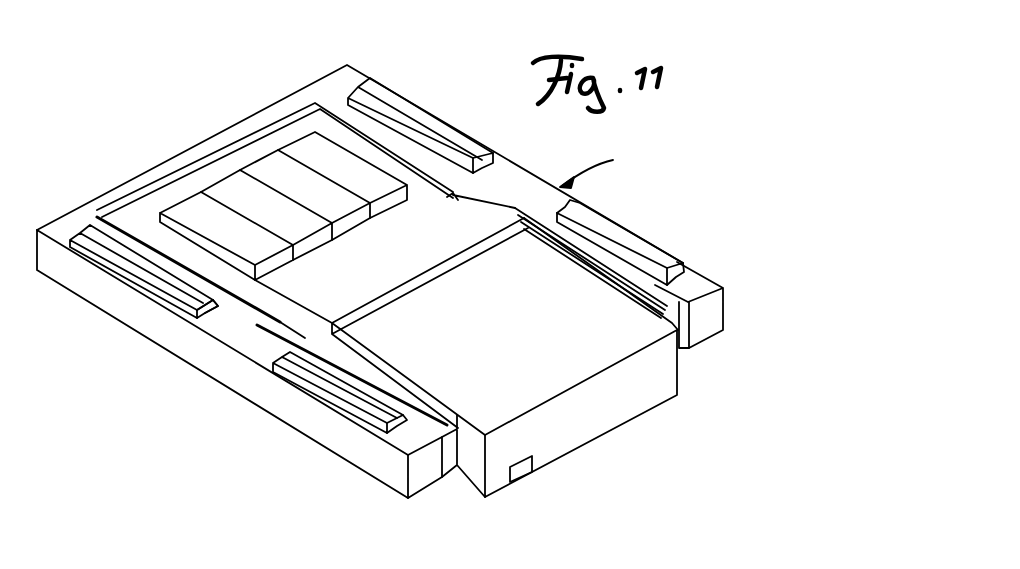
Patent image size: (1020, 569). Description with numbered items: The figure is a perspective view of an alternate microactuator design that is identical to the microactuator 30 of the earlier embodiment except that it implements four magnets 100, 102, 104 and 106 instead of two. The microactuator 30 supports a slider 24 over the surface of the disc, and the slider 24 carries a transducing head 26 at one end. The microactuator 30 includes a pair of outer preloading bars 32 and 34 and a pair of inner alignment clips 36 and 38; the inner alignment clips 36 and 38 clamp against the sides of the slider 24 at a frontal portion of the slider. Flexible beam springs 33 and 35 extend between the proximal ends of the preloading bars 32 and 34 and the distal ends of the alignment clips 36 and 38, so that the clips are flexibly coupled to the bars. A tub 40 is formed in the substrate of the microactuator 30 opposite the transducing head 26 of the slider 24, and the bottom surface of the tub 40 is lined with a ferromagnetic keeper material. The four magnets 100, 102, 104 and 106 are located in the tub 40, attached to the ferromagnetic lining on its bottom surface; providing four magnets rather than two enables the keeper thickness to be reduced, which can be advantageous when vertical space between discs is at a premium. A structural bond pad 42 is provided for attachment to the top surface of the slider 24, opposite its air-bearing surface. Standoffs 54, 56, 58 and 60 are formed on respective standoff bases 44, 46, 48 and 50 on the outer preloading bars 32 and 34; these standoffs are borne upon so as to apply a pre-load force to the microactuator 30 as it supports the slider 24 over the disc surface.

The slider 24 is at (552, 455).
The transducing head 26 is at (523, 470).
The microactuator 30 is at (597, 157).
The outer preloading bar 32 is at (712, 306).
The flexible beam spring 33 is at (600, 228).
The outer preloading bar 34 is at (420, 477).
The flexible beam spring 35 is at (330, 366).
The inner alignment clip 36 is at (683, 350).
The inner alignment clip 38 is at (457, 457).
The tub 40 is at (152, 212).
The structural bond pad 42 is at (452, 230).
The standoff base 44 is at (500, 167).
The standoff base 46 is at (684, 280).
The standoff base 48 is at (200, 303).
The standoff base 50 is at (407, 437).
The standoff 54 is at (400, 108).
The standoff 56 is at (627, 245).
The standoff 58 is at (153, 267).
The standoff 60 is at (357, 395).
The magnet 100 is at (308, 143).
The magnet 102 is at (263, 167).
The magnet 104 is at (223, 188).
The magnet 106 is at (183, 200).